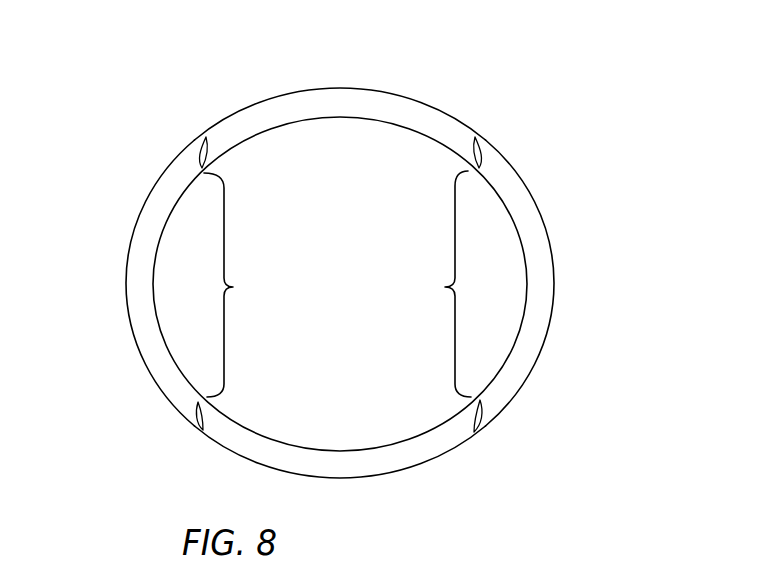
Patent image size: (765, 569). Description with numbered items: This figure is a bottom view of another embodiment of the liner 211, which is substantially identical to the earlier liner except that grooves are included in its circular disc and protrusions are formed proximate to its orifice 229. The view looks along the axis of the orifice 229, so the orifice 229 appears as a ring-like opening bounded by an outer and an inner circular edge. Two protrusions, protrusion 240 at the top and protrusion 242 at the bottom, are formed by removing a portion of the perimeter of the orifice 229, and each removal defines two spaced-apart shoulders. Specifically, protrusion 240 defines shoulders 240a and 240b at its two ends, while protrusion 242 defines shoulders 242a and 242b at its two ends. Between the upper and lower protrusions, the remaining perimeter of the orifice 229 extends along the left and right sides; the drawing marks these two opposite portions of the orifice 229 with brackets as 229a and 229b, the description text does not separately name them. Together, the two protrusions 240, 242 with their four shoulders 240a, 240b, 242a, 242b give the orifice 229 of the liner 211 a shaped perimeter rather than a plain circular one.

The liner 211 is at (377, 292).
The orifice 229 is at (375, 118).
The first inner surface section 229a is at (247, 285).
The second inner surface section 229b is at (432, 284).
The protrusion 240 is at (302, 103).
The shoulder 240a is at (194, 161).
The shoulder 240b is at (487, 161).
The protrusion 242 is at (342, 468).
The shoulder 242a is at (190, 410).
The shoulder 242b is at (489, 410).